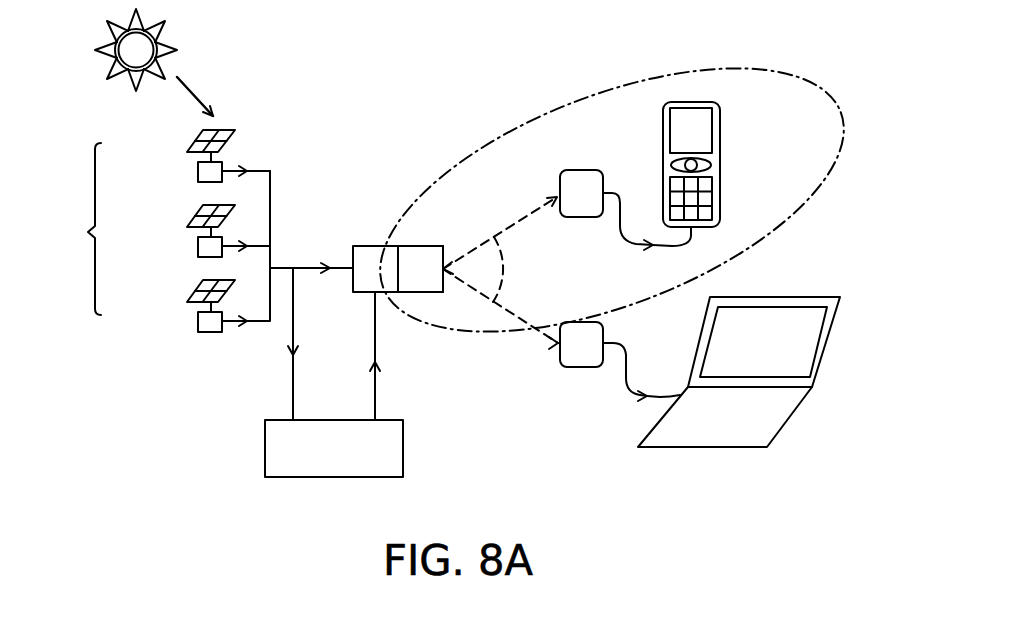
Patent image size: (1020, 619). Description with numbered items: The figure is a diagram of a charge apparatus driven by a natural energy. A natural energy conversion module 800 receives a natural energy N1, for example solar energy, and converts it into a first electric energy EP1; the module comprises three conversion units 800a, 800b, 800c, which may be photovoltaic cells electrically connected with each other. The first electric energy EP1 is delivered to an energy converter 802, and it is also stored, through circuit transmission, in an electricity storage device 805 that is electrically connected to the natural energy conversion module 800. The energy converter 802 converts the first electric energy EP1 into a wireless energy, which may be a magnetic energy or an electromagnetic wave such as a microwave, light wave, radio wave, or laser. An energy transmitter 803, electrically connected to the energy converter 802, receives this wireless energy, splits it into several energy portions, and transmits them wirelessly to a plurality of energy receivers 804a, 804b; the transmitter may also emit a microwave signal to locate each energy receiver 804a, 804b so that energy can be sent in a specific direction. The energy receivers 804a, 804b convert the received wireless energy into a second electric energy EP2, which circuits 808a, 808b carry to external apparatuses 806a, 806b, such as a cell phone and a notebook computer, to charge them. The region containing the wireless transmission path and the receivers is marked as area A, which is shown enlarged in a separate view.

The natural energy conversion module 800 is at (157, 231).
The conversion unit 800a is at (182, 147).
The conversion unit 800b is at (182, 222).
The conversion unit 800c is at (182, 297).
The energy converter 802 is at (372, 257).
The energy transmitter 803 is at (425, 283).
The energy receiver 804a is at (585, 170).
The energy receiver 804b is at (573, 358).
The electricity storage device 805 is at (372, 448).
The external apparatus 806a is at (720, 168).
The external apparatus 806b is at (772, 413).
The circuit 808a is at (612, 233).
The circuit 808b is at (628, 378).
The natural energy N1 is at (193, 91).
The area A is at (497, 160).
The first electric energy EP1 is at (325, 295).
The second electric energy EP2 is at (632, 318).